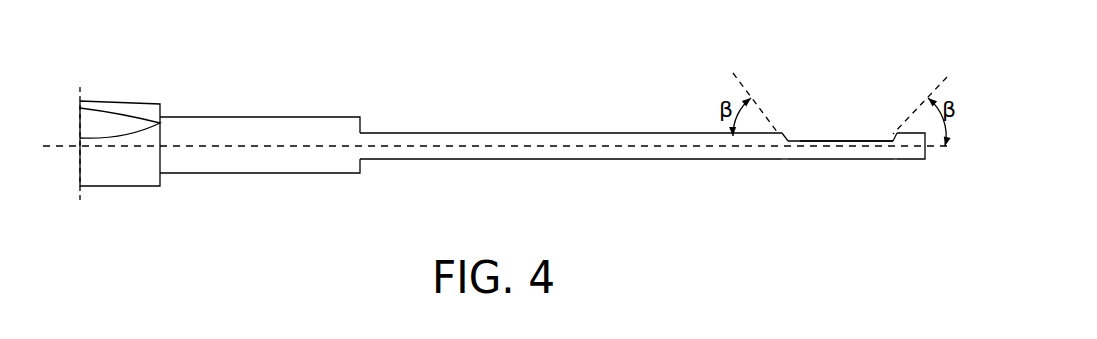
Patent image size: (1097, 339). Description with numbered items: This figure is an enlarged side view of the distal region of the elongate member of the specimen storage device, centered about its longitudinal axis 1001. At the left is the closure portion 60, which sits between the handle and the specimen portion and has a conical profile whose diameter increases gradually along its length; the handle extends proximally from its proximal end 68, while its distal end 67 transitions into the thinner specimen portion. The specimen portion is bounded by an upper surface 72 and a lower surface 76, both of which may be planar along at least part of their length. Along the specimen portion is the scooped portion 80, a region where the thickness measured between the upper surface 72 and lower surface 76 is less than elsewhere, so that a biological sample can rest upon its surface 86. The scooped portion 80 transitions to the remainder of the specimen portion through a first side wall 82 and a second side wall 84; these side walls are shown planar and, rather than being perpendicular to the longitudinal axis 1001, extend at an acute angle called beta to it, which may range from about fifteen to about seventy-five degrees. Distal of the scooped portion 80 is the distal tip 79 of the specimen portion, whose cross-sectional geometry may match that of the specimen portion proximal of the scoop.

The longitudinal axis 1001 is at (66, 147).
The proximal end 68 is at (161, 118).
The closure portion 60 is at (268, 163).
The distal end 67 is at (361, 174).
The upper surface 72 is at (762, 132).
The scooped portion 80 is at (840, 138).
The surface 86 is at (872, 140).
The distal tip 79 is at (906, 134).
The side wall 82 is at (780, 160).
The lower surface 76 is at (803, 161).
The side wall 84 is at (895, 160).